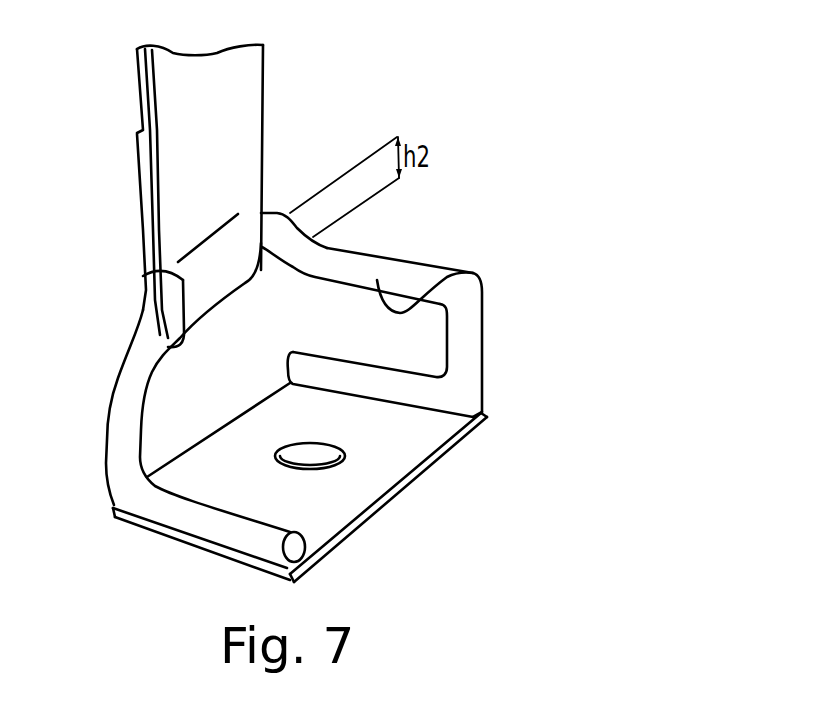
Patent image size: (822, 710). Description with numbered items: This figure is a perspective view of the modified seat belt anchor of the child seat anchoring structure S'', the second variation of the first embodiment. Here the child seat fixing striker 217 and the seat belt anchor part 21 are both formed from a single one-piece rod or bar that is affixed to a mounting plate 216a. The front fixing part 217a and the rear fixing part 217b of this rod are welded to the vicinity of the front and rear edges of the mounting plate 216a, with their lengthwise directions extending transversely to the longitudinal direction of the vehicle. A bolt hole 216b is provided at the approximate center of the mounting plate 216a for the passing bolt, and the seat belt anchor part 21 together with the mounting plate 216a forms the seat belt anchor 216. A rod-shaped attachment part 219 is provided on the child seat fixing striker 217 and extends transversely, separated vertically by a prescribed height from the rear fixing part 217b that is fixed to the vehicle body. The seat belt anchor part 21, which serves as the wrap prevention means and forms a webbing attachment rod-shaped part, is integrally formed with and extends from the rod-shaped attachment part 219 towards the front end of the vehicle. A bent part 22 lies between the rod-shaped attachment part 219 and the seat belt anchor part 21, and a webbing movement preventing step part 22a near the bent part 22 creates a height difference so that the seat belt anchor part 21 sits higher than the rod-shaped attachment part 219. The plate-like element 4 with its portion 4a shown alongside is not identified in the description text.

The tab 4 is at (233, 135).
The tab portion 4a is at (143, 276).
The seat belt anchor part 21 is at (127, 350).
The bent part 22 is at (291, 210).
The webbing movement preventing step part 22a is at (300, 222).
The seat belt anchor 216 is at (369, 525).
The mounting plate 216a is at (372, 481).
The bolt hole 216b is at (300, 443).
The child seat fixing striker 217 is at (437, 260).
The front fixing part 217a is at (222, 528).
The rear fixing part 217b is at (372, 362).
The rod-shaped attachment part 219 is at (460, 271).
The child seat anchoring structure S'' is at (644, 222).